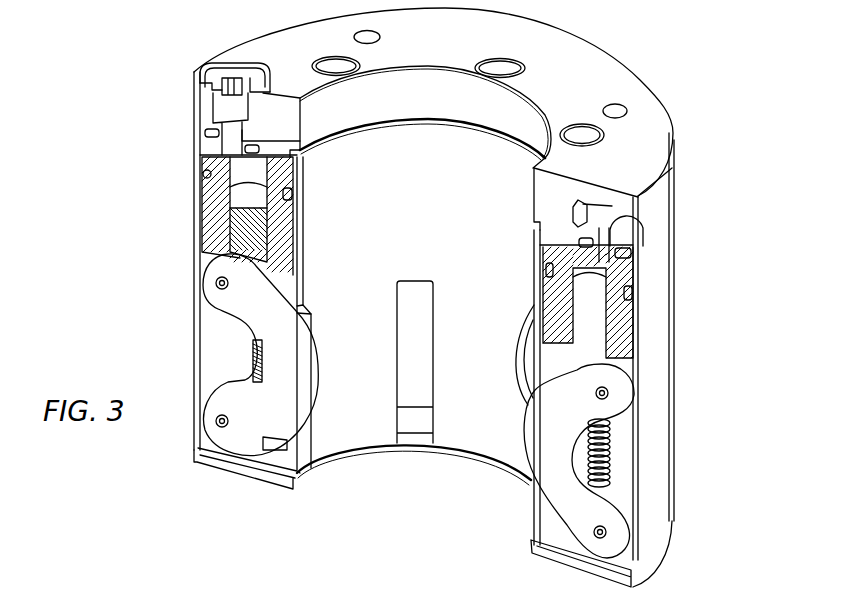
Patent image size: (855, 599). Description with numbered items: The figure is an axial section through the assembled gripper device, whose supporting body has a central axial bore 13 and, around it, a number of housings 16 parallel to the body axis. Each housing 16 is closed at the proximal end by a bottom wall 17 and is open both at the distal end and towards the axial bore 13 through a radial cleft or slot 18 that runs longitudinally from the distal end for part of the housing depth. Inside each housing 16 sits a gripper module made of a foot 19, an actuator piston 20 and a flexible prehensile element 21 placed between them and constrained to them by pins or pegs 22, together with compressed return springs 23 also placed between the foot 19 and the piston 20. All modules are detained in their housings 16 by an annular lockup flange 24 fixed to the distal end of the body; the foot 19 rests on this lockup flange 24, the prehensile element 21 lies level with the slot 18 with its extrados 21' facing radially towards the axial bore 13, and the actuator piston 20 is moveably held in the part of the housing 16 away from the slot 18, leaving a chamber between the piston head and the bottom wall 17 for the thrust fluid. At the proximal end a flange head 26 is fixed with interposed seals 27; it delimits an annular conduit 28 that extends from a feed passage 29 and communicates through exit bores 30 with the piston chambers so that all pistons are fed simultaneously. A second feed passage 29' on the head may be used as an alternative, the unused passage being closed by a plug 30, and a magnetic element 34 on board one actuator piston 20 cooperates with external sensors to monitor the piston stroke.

The axial bore 13 is at (475, 441).
The housing 16 is at (217, 323).
The bottom wall 17 is at (556, 238).
The radial cleft or slot 18 is at (303, 446).
The foot 19 is at (278, 458).
The actuator piston 20 is at (207, 193).
The flexible prehensile element 21 is at (413, 339).
The extrados 21' is at (347, 391).
The pins or pegs 22 is at (216, 283).
The compressed return spring 23 is at (251, 354).
The annular lockup flange 24 is at (226, 465).
The flange head 26 is at (553, 51).
The seals 27 is at (206, 133).
The annular conduit 28 is at (629, 214).
The feed passage 29 is at (668, 221).
The feed passage 29' is at (194, 104).
The exit bores / plug 30 is at (224, 68).
The magnetic element 34 is at (242, 236).